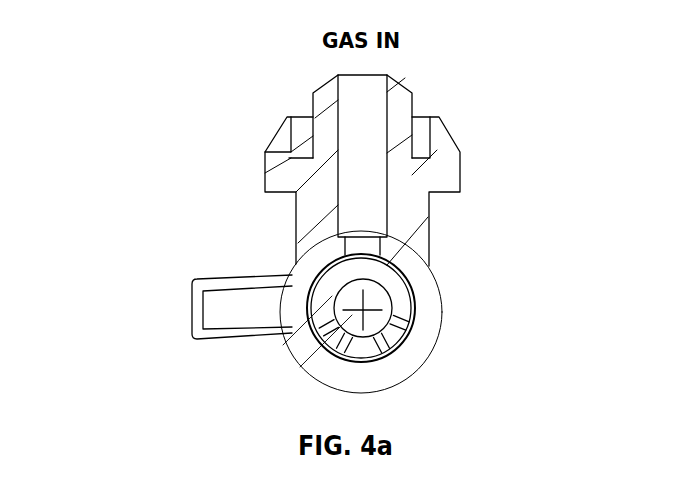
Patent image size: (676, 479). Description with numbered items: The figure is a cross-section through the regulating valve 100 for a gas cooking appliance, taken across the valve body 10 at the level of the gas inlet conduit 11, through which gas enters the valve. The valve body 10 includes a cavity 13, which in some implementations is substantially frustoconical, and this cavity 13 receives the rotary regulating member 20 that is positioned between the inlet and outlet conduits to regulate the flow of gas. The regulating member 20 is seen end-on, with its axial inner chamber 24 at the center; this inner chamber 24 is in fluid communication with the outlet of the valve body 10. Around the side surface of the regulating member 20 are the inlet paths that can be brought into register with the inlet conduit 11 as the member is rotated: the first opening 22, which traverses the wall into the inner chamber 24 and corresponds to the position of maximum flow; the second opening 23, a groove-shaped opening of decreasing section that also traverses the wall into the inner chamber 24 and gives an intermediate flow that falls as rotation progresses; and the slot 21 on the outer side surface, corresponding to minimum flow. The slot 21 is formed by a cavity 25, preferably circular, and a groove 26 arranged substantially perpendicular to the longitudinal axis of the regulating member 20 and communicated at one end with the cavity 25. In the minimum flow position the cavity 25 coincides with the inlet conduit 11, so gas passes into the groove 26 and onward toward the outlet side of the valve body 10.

The regulating valve 100 is at (185, 103).
The valve body 10 is at (260, 177).
The gas inlet conduit 11 is at (367, 202).
The cavity 13 is at (416, 310).
The rotary regulating member 20 is at (333, 342).
The slot 21 is at (410, 345).
The first opening 22 is at (358, 270).
The second opening 23 is at (388, 273).
The axial inner chamber 24 is at (350, 294).
The cavity 25 is at (366, 357).
The groove 26 is at (415, 294).